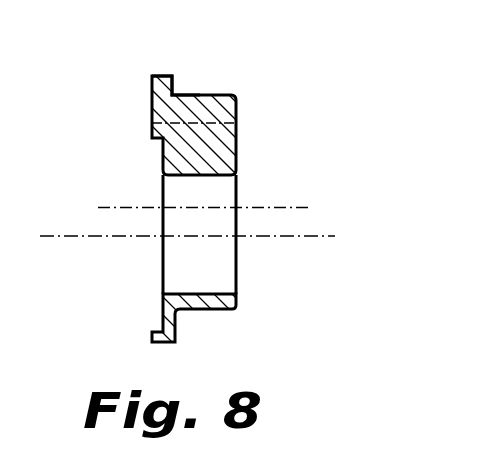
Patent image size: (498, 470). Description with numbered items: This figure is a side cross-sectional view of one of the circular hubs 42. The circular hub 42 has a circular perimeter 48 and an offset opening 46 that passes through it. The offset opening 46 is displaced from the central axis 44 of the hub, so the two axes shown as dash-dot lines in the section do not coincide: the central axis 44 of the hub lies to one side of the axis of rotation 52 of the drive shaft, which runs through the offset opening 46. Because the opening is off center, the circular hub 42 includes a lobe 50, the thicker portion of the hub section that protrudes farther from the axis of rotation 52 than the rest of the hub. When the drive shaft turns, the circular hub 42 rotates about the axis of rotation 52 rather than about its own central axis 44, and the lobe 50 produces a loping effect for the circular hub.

The circular hub 42 is at (196, 185).
The central axis 44 is at (267, 208).
The offset opening 46 is at (232, 190).
The circular perimeter 48 is at (188, 95).
The lobe 50 is at (210, 93).
The axis of rotation 52 is at (82, 235).